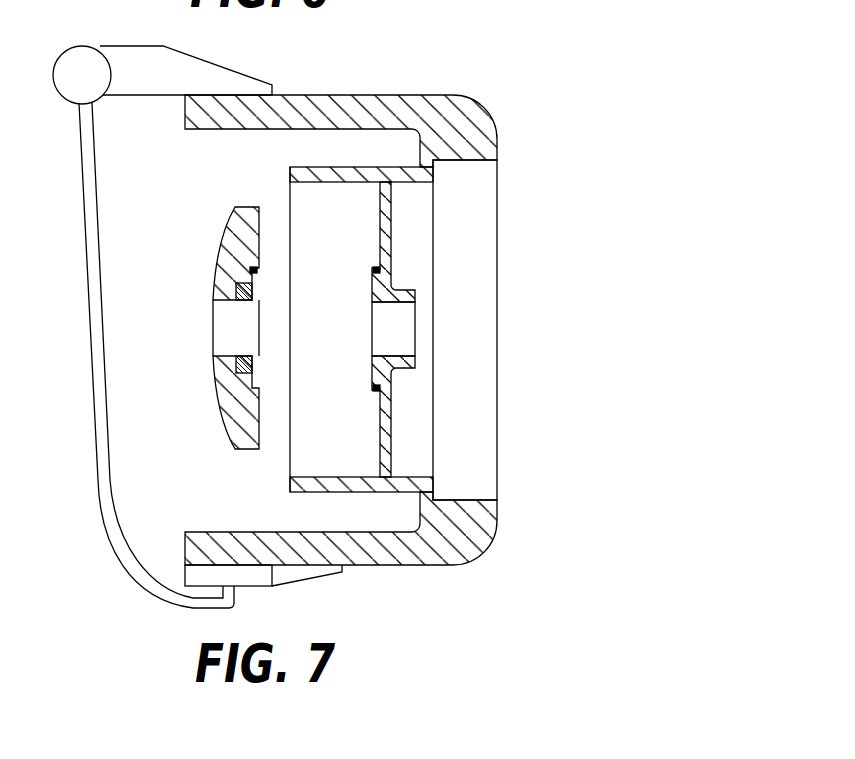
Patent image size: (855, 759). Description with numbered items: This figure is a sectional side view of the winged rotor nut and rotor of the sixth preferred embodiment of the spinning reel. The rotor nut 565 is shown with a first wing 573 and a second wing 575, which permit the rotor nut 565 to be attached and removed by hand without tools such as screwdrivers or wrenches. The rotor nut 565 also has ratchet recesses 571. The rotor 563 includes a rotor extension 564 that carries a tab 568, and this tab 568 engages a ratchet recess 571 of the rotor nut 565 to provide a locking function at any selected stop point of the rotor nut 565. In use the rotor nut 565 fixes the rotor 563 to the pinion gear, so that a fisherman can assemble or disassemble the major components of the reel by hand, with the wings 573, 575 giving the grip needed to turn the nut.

The rotor 563 is at (495, 70).
The rotor extension 564 is at (376, 392).
The rotor nut 565 is at (233, 302).
The tab 568 is at (372, 268).
The ratchet recess 571 is at (257, 270).
The first wing 573 is at (220, 262).
The second wing 575 is at (232, 428).